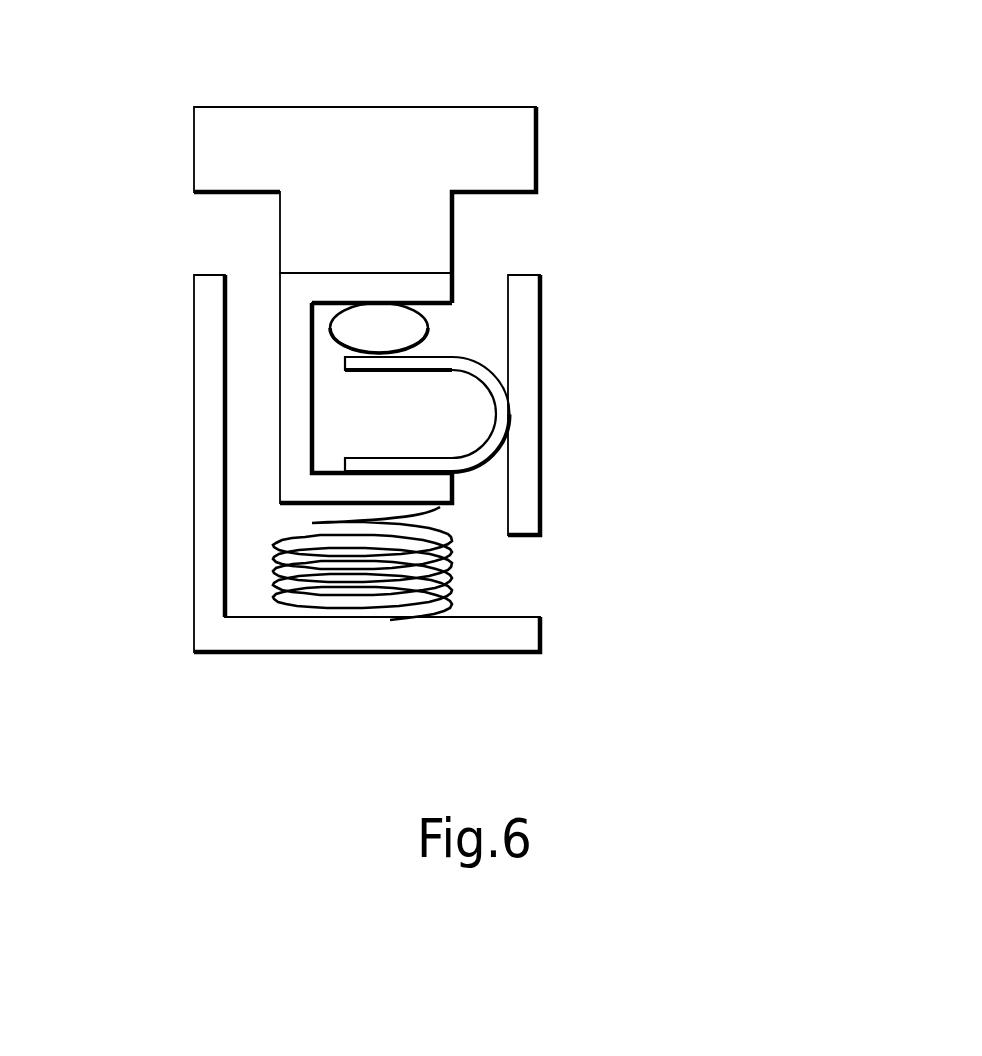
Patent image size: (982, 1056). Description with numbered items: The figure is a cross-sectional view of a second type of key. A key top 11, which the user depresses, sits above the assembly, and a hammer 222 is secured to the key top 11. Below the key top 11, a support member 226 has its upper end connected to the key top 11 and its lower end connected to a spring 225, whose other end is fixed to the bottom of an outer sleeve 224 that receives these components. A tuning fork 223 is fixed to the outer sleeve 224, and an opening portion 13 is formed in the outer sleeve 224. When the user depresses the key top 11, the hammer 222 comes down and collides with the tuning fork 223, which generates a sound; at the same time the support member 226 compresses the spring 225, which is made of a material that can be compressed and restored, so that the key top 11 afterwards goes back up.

The key top 11 is at (448, 112).
The hammer 222 is at (350, 330).
The tuning fork 223 is at (470, 357).
The outer sleeve 224 is at (530, 397).
The spring 225 is at (453, 551).
The support member 226 is at (292, 433).
The opening portion 13 is at (525, 584).